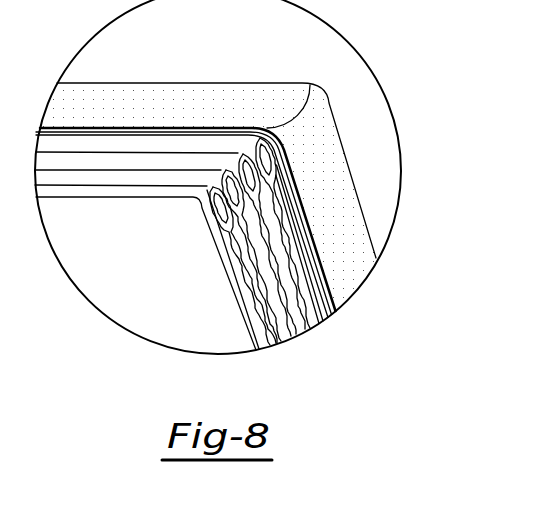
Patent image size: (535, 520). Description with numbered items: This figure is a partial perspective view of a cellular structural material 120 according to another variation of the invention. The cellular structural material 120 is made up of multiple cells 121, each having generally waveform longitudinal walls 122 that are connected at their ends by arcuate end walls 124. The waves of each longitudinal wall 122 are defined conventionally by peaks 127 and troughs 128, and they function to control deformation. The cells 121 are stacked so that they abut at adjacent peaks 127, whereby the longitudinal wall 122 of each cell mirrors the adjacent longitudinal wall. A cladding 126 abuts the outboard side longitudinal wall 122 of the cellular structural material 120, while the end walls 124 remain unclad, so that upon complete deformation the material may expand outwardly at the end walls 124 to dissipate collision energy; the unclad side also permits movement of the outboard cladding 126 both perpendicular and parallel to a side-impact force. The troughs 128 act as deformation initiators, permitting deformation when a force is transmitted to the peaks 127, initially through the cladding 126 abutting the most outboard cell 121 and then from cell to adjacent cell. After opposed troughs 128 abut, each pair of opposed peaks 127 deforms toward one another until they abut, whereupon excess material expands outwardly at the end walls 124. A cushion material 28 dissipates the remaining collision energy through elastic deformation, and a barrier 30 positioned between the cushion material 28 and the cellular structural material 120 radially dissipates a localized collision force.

The cushion material 28 is at (188, 100).
The barrier 30 is at (310, 84).
The cellular structural material 120 is at (349, 295).
The cell 121 is at (212, 208).
The longitudinal wall 122 is at (233, 277).
The end wall 124 is at (197, 186).
The cladding 126 is at (129, 294).
The peak 127 is at (253, 331).
The trough 128 is at (236, 292).